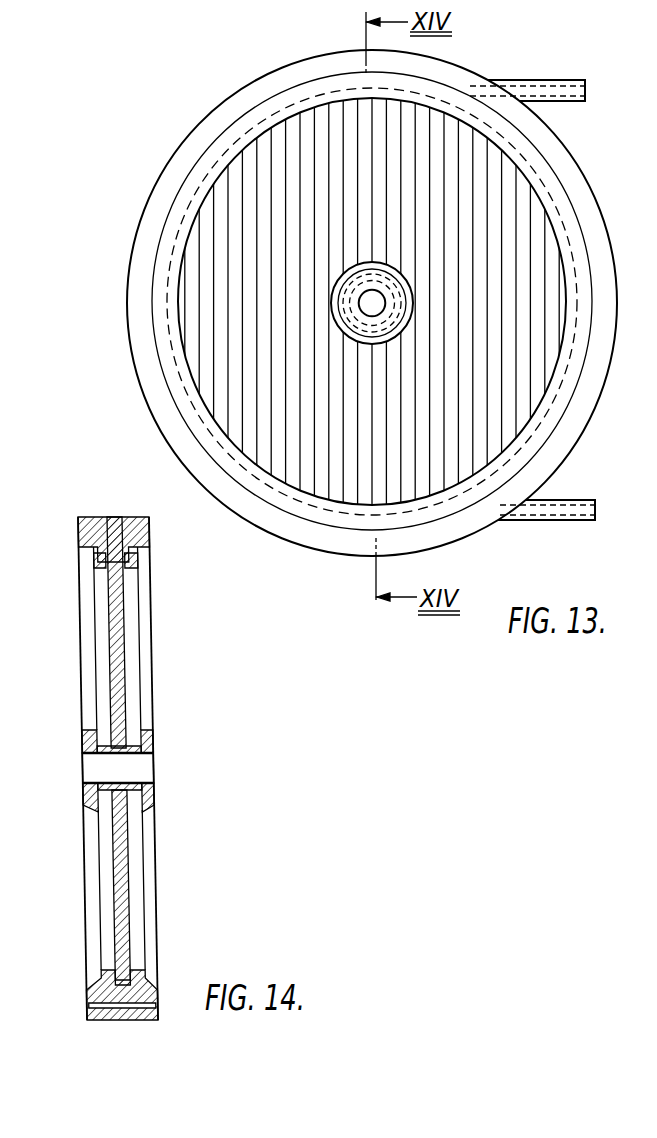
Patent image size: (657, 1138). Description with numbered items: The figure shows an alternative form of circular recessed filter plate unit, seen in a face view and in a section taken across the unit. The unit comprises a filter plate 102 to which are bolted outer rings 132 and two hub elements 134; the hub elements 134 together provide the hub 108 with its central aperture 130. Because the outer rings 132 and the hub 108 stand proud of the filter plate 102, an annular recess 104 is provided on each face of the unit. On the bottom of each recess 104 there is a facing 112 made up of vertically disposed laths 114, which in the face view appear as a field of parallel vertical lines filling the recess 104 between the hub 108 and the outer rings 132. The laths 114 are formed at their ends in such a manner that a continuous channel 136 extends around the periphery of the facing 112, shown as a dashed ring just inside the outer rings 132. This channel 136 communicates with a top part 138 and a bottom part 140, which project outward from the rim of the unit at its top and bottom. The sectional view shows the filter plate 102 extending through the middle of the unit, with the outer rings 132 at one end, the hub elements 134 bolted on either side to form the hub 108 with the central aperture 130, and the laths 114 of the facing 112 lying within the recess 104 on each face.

In FIG. 14, the filter plate 102 is at (118, 857).
In FIG. 14, the annular recess 104 is at (88, 665).
In FIG. 13, the hub 108 is at (348, 309).
In FIG. 14, the hub 108 is at (97, 755).
In FIG. 13, the facing 112 is at (500, 437).
In FIG. 13, the laths 114 is at (543, 213).
In FIG. 14, the laths 114 is at (82, 618).
In FIG. 14, the central aperture 130 is at (132, 753).
In FIG. 14, the outer rings 132 is at (137, 517).
In FIG. 13, the hub elements 134 is at (333, 293).
In FIG. 14, the hub elements 134 is at (92, 743).
In FIG. 13, the continuous channel 136 is at (557, 390).
In FIG. 14, the continuous channel 136 is at (102, 557).
In FIG. 13, the top part 138 is at (586, 92).
In FIG. 13, the bottom part 140 is at (595, 510).